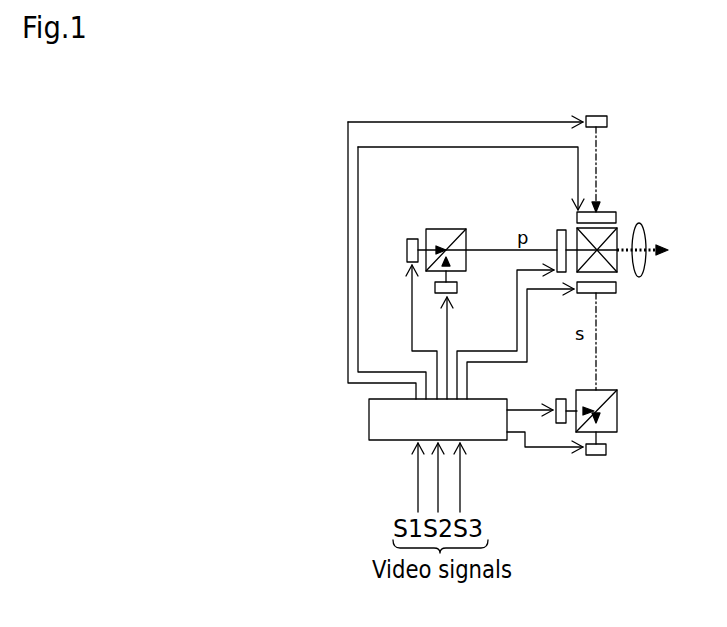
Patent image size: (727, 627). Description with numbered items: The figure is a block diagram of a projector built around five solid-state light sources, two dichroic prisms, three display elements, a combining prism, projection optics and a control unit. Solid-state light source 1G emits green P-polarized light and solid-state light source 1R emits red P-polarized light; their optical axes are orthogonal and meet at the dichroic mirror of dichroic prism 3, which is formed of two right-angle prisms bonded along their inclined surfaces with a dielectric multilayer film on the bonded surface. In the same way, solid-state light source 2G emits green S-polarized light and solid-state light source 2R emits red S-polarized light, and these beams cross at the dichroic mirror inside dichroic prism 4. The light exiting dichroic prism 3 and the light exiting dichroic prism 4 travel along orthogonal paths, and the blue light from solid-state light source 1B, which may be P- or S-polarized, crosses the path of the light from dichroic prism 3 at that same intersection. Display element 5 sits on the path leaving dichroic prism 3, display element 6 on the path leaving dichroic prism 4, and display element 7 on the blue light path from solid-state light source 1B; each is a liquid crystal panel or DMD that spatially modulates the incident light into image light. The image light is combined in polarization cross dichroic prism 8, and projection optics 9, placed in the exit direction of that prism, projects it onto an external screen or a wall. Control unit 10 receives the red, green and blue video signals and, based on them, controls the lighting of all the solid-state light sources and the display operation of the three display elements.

The solid-state light source 1B is at (599, 115).
The solid-state light source 1G is at (411, 239).
The solid-state light source 1R is at (457, 290).
The solid-state light source 2R is at (557, 400).
The solid-state light source 2G is at (594, 456).
The dichroic prism 3 is at (442, 229).
The dichroic prism 4 is at (617, 410).
The display element 5 is at (557, 231).
The display element 6 is at (617, 292).
The display element 7 is at (612, 212).
The polarization cross dichroic prism 8 is at (619, 226).
The projection optics 9 is at (647, 273).
The control unit 10 is at (369, 421).